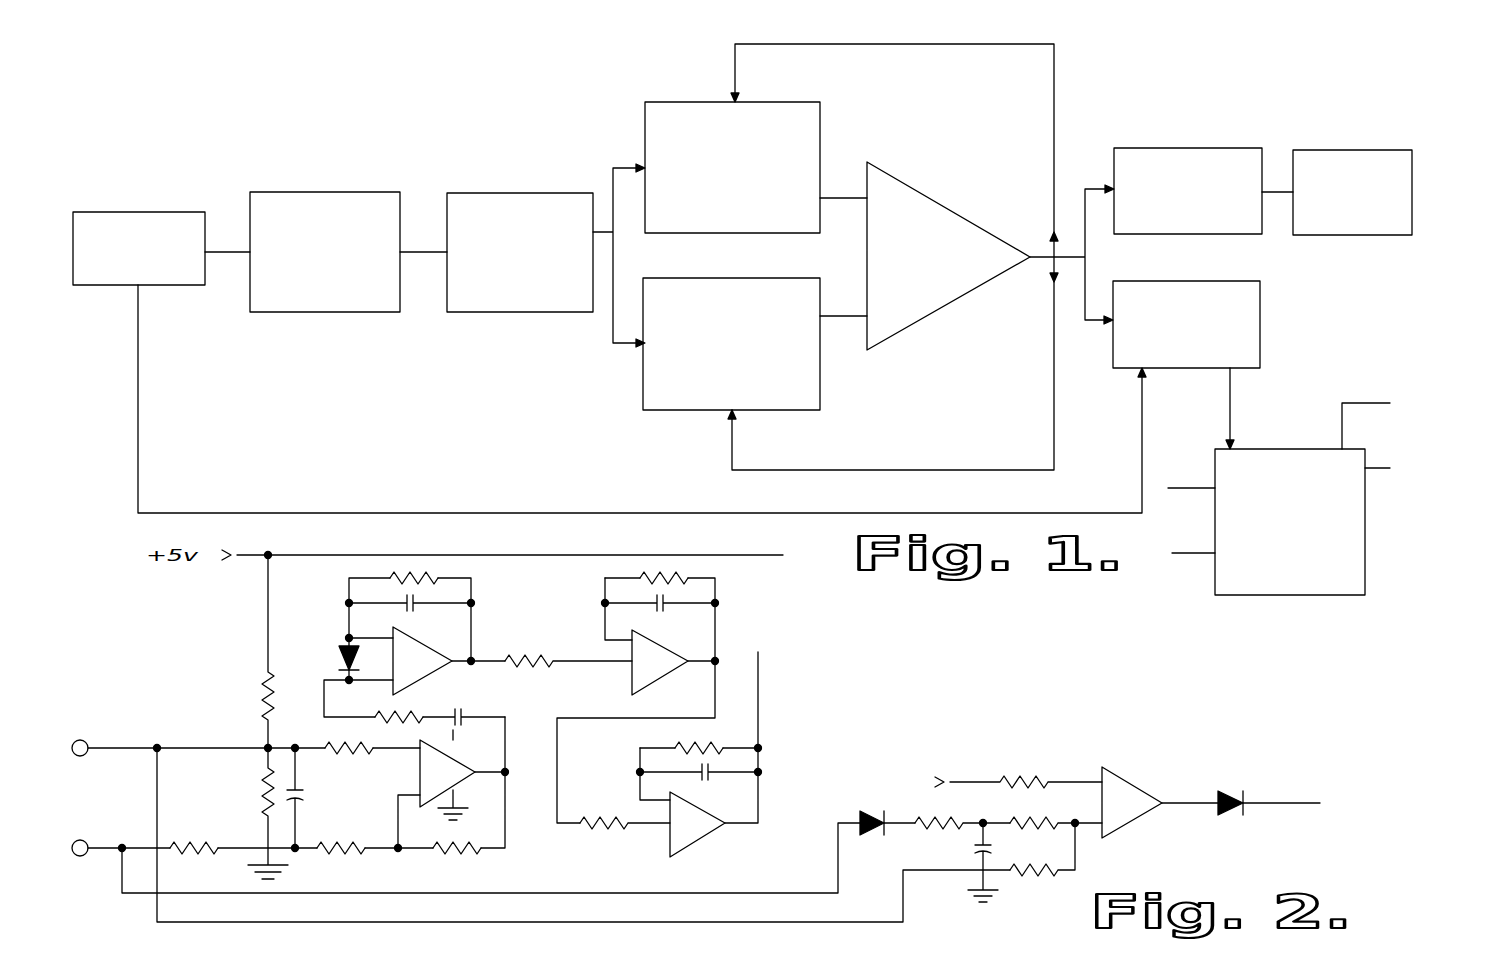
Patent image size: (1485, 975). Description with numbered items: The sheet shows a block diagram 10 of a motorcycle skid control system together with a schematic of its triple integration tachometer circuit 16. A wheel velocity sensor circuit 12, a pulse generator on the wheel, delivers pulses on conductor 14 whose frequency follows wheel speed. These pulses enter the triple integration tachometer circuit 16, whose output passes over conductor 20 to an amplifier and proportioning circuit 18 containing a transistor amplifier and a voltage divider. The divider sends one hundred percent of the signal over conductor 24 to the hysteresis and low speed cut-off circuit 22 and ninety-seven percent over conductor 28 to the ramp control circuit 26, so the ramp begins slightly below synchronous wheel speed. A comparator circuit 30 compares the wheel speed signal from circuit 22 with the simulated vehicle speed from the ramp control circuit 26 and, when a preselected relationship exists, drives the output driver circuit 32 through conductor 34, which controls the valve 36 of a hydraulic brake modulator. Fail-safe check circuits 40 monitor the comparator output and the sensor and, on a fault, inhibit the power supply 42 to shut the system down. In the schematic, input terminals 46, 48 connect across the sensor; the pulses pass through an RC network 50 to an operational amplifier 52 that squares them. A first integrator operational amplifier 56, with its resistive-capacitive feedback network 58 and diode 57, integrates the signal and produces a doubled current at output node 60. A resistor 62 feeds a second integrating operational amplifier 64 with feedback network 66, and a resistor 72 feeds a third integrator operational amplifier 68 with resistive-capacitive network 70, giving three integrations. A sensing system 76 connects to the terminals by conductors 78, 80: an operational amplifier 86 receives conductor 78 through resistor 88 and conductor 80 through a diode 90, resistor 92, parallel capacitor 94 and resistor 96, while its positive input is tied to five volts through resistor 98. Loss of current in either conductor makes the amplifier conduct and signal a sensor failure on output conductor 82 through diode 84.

In FIG. 1, the block diagram 10 is at (940, 388).
In FIG. 1, the wheel velocity sensor circuit 12 is at (145, 212).
In FIG. 2, the wheel velocity sensor circuit 12 is at (208, 807).
In FIG. 1, the conductor 14 is at (225, 250).
In FIG. 1, the triple integration tachometer circuit 16 is at (346, 192).
In FIG. 2, the triple integration tachometer circuit 16 is at (918, 690).
In FIG. 1, the amplifier and proportioning circuit 18 is at (508, 193).
In FIG. 1, the conductor 20 is at (432, 250).
In FIG. 1, the hysteresis and low speed cut-off circuit 22 is at (820, 118).
In FIG. 1, the conductor 24 is at (613, 215).
In FIG. 1, the ramp control circuit 26 is at (784, 411).
In FIG. 1, the conductor 28 is at (612, 323).
In FIG. 1, the comparator circuit 30 is at (918, 196).
In FIG. 1, the output driver circuit 32 is at (1195, 148).
In FIG. 1, the conductor 34 is at (1068, 255).
In FIG. 1, the valve 36 is at (1325, 150).
In FIG. 1, the fail-safe check circuits 40 is at (1262, 308).
In FIG. 1, the power supply and inhibit 42 is at (1310, 595).
In FIG. 2, the input terminal 46 is at (88, 744).
In FIG. 2, the input terminal 48 is at (88, 842).
In FIG. 2, the RC network 50 is at (300, 740).
In FIG. 2, the operational amplifier 52 is at (458, 785).
In FIG. 2, the first integrator operational amplifier 56 is at (428, 647).
In FIG. 2, the diode 57 is at (346, 647).
In FIG. 2, the resistive-capacitive feedback network 58 is at (430, 574).
In FIG. 2, the output node 60 is at (473, 667).
In FIG. 2, the resistor 62 is at (536, 656).
In FIG. 2, the second integrating operational amplifier 64 is at (670, 650).
In FIG. 2, the resistive-capacitive feedback network 66 is at (672, 574).
In FIG. 2, the third integrator operational amplifier 68 is at (697, 842).
In FIG. 2, the resistive-capacitive network 70 is at (726, 737).
In FIG. 2, the resistor 72 is at (604, 832).
In FIG. 2, the sensing system 76 is at (1125, 768).
In FIG. 2, the conductor 78 is at (838, 922).
In FIG. 2, the conductor 80 is at (770, 893).
In FIG. 2, the output conductor 82 is at (1280, 803).
In FIG. 2, the diode 84 is at (1232, 793).
In FIG. 2, the operational amplifier 86 is at (1138, 785).
In FIG. 2, the resistor 88 is at (1040, 872).
In FIG. 2, the diode 90 is at (866, 810).
In FIG. 2, the resistor 92 is at (958, 820).
In FIG. 2, the parallel capacitor 94 is at (975, 846).
In FIG. 2, the resistor 96 is at (1040, 822).
In FIG. 2, the resistor 98 is at (1025, 778).